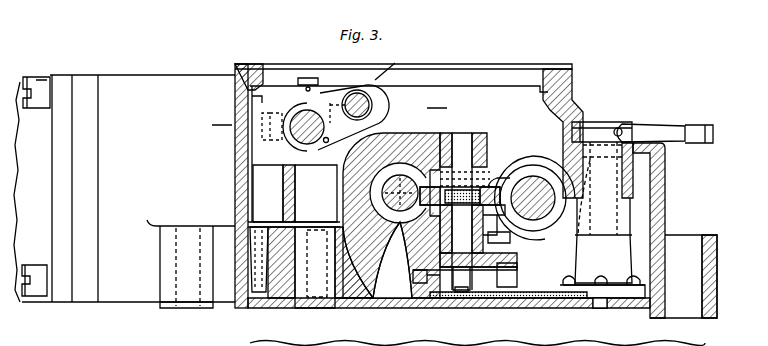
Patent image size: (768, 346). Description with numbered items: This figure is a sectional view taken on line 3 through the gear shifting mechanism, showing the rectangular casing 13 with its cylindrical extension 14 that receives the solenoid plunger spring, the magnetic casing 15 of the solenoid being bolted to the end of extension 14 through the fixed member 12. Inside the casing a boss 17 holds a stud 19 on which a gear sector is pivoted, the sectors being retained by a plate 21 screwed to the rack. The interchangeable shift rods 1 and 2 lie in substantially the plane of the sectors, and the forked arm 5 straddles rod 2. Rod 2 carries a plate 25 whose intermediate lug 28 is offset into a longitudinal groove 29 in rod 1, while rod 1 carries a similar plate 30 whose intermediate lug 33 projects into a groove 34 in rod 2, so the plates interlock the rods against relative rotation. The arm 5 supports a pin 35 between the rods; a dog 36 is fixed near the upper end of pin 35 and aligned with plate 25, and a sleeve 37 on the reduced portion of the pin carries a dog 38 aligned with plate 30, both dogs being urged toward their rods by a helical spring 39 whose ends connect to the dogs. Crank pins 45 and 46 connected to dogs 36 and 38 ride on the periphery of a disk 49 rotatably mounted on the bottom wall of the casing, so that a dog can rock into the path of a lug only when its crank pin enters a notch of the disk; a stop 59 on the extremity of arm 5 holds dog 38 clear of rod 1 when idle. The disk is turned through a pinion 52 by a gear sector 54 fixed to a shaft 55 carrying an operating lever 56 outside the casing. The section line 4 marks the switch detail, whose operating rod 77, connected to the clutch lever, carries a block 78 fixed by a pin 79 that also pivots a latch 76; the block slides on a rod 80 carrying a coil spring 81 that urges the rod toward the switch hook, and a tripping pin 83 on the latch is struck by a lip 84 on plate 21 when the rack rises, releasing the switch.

The shift rod 1 is at (555, 187).
The shift rod 2 is at (362, 153).
The section line 3- 3 is at (281, 183).
The section line 4- 4 is at (322, 113).
The arm 5 is at (424, 148).
The fixed member 12 is at (80, 302).
The casing 13 is at (573, 86).
The cylindrical extension 14 is at (124, 188).
The magnetic casing 15 is at (16, 302).
The boss 17 is at (283, 285).
The stud 19 is at (313, 308).
The plate 21 is at (331, 168).
The plate 25 is at (392, 62).
The intermediate lug 28 is at (497, 188).
The groove 29 is at (503, 205).
The plate 30 is at (590, 214).
The intermediate lug 33 is at (377, 306).
The groove 34 is at (403, 133).
The pin 35 is at (474, 133).
The dog 36 is at (490, 165).
The sleeve 37 is at (420, 306).
The dog 38 is at (399, 306).
The helical spring 39 is at (456, 133).
The crank pin 45 is at (454, 306).
The crank pin 46 is at (505, 308).
The disk 49 is at (490, 308).
The pinion 52 is at (445, 308).
The gear sector 54 is at (540, 308).
The shaft 55 is at (610, 122).
The operating lever 56 is at (664, 132).
The stop 59 is at (510, 240).
The latch 76 is at (252, 99).
The operating rod 77 is at (300, 112).
The block 78 is at (328, 86).
The pin 79 is at (308, 78).
The rod 80 is at (338, 131).
The coil spring 81 is at (362, 90).
The tripping pin 83 is at (283, 146).
The lip 84 is at (302, 170).